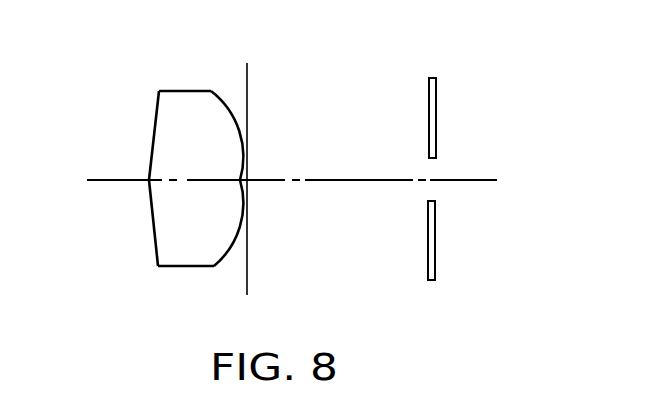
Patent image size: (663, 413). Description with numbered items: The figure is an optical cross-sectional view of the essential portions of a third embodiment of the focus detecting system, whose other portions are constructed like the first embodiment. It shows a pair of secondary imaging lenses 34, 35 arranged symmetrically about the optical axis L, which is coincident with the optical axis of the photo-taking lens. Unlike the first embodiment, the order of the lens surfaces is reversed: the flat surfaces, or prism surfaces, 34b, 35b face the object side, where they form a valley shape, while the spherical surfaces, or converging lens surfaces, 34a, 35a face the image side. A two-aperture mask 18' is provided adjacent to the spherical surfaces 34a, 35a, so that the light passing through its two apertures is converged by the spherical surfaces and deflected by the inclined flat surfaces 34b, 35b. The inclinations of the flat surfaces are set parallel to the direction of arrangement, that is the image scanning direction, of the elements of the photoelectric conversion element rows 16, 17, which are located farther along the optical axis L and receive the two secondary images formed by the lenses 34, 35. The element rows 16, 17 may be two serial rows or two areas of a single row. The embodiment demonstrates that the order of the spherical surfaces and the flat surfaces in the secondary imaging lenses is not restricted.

The secondary imaging lens 34 is at (194, 113).
The spherical surface 34a is at (243, 150).
The flat surface 34b is at (152, 140).
The secondary imaging lens 35 is at (194, 253).
The spherical surface 35a is at (243, 212).
The flat surface 35b is at (153, 236).
The two-aperture mask 18' is at (281, 170).
The photoelectric conversion element row 16 is at (436, 92).
The photoelectric conversion element row 17 is at (435, 252).
The optical axis L is at (467, 178).